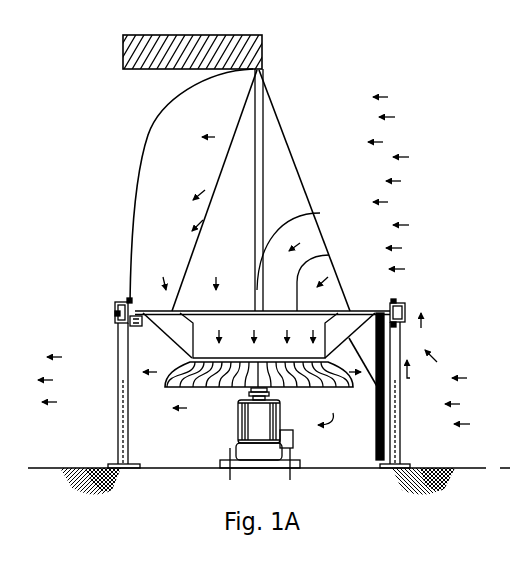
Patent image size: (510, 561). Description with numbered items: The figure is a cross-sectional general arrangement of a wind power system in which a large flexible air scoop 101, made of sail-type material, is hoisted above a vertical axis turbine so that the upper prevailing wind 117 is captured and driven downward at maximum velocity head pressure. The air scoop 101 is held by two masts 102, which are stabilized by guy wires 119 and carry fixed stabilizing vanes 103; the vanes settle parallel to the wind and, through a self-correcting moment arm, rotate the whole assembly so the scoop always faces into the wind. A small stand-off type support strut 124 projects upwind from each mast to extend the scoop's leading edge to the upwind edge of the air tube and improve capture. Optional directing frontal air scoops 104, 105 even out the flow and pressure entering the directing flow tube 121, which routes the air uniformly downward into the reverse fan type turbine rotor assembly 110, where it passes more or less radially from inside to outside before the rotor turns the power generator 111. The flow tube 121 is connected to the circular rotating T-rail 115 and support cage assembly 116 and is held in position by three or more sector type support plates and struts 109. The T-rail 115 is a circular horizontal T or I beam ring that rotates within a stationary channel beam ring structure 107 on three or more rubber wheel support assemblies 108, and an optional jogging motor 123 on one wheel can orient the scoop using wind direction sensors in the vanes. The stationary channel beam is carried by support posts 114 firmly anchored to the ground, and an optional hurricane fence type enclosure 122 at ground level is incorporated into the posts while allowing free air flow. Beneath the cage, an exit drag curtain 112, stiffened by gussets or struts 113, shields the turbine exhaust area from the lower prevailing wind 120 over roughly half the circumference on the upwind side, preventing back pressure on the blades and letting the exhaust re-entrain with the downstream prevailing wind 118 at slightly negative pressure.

The air scoop 101 is at (149, 126).
The mast 102 is at (264, 88).
The stabilizing vane 103 is at (203, 35).
The directing frontal air scoop 104 is at (306, 222).
The directing frontal air scoop 105 is at (322, 258).
The channel beam ring structure 107 is at (117, 303).
The rubber wheel support assembly 108 is at (127, 301).
The sector type support plates and struts 109 is at (173, 340).
The turbine rotor assembly 110 is at (176, 385).
The power generator 111 is at (283, 420).
The exit drag curtain 112 is at (377, 432).
The stiffening gusset or strut 113 is at (366, 364).
The support post 114 is at (129, 428).
The rotating T-rail 115 is at (391, 307).
The support cage assembly 116 is at (352, 308).
The upper prevailing wind 117 is at (388, 183).
The downstream prevailing wind 118 is at (50, 369).
The guy wire 119 is at (231, 146).
The lower prevailing wind 120 is at (441, 368).
The flow tube 121 is at (200, 350).
The hurricane fence type enclosure 122 is at (120, 423).
The jogging motor 123 is at (133, 326).
The stand-off type support strut 124 is at (291, 140).